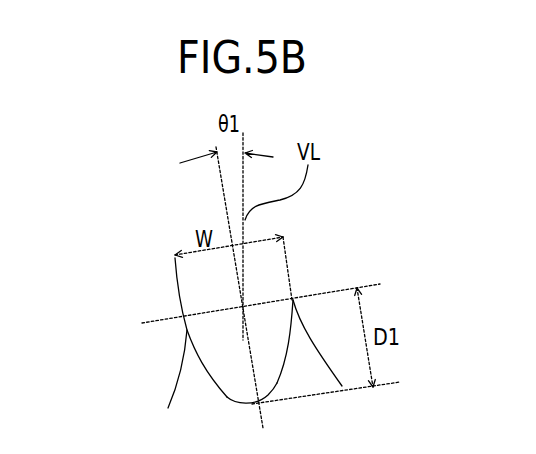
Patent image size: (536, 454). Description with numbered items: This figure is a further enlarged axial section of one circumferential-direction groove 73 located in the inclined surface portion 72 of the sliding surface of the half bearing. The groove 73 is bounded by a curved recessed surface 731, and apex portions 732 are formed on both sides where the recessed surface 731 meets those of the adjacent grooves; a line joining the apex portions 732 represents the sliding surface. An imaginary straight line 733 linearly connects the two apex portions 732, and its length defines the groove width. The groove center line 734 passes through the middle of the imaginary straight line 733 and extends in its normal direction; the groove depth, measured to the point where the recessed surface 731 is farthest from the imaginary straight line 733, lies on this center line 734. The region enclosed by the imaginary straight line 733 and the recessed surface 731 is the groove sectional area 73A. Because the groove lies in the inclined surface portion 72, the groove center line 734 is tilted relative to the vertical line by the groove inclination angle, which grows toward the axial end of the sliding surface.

The inclined surface portion 72 is at (158, 321).
The circumferential-direction groove 73 is at (213, 345).
The groove sectional area 73A is at (215, 360).
The recessed surface 731 is at (274, 374).
The apex portion 732 is at (178, 295).
The imaginary straight line 733 is at (253, 306).
The groove center line 734 is at (223, 202).